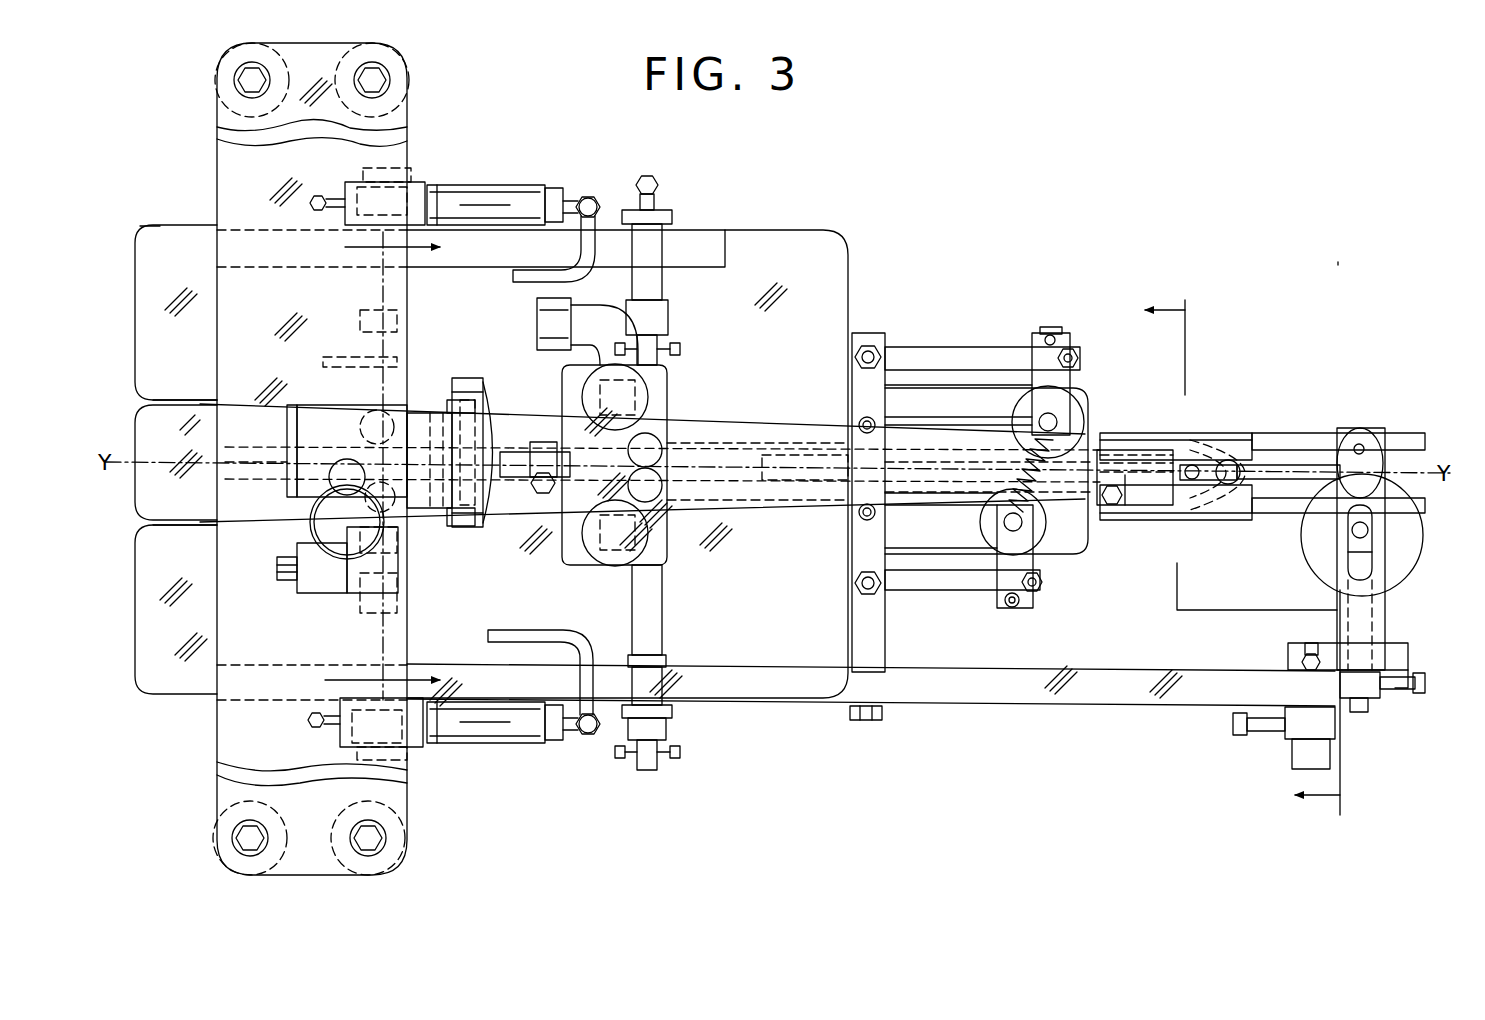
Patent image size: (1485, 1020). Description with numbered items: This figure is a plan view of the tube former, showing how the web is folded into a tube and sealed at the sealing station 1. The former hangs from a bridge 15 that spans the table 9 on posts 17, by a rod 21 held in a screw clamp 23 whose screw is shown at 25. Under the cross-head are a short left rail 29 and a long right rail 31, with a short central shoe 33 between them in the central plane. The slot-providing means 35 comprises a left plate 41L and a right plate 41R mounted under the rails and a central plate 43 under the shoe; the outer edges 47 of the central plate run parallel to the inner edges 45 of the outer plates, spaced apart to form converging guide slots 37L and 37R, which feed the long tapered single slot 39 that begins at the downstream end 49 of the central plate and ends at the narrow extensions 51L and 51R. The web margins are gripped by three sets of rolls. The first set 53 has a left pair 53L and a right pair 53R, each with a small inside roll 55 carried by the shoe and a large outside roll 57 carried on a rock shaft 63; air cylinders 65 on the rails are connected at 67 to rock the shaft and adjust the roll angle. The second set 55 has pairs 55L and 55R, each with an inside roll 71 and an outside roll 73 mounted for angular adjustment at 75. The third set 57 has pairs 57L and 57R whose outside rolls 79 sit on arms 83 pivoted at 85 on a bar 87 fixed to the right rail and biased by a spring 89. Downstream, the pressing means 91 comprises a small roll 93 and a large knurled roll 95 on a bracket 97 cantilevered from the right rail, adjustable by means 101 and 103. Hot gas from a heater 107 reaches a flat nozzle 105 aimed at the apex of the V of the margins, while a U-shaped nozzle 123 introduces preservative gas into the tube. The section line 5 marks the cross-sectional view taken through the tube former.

The sealing station 1 is at (1338, 265).
The section line 5- 5 is at (1253, 553).
The table 9 is at (368, 463).
The bridge 15 is at (217, 175).
The posts 17 is at (228, 107).
The rod 21 is at (330, 548).
The screw clamp 23 is at (300, 593).
The screw 25 is at (466, 528).
The short rail 29 is at (722, 245).
The long rail 31 is at (972, 688).
The central shoe 33 is at (238, 482).
The slot-providing means 35 is at (148, 224).
The left guide slot 37L is at (178, 400).
The right guide slot 37R is at (160, 525).
The single guide slot 39 is at (485, 515).
The left hand horizontal plate 41L is at (135, 275).
The right hand horizontal plate 41R is at (135, 640).
The central plate 43 is at (135, 460).
The inner edges 45 is at (506, 425).
The outer edges 47 is at (200, 407).
The downstream end 49 is at (432, 512).
The left forward end extension 51L is at (955, 385).
The right forward end extension 51R is at (935, 555).
The first set of rolls 53 is at (350, 305).
The left-hand pair of rolls 53L is at (338, 380).
The right-hand pair of rolls 53R is at (340, 533).
The second set of rolls 55 is at (678, 350).
The left-hand pair of rolls 55L is at (667, 395).
The right-hand pair of rolls 55R is at (667, 548).
The third set of rolls 57 is at (372, 348).
The left-hand pair of rolls 57L is at (1072, 388).
The right-hand pair of rolls 57R is at (1042, 548).
The rock shaft 63 is at (370, 640).
The air cylinders 65 is at (480, 185).
The connection 67 is at (408, 182).
The inside roll 71 is at (672, 443).
The outside roll 73 is at (650, 400).
The mounting means 75 is at (650, 176).
The outside roll 79 is at (1084, 420).
The arms 83 is at (968, 347).
The pivot 85 is at (855, 357).
The bar 87 is at (866, 333).
The spring 89 is at (1032, 445).
The pressing means 91 is at (1310, 575).
The small roll 93 is at (1352, 430).
The large roll 95 is at (1405, 572).
The bracket 97 is at (1410, 650).
The adjusting means 101 is at (1268, 750).
The adjusting means 103 is at (1368, 710).
The nozzle 105 is at (1270, 495).
The heater 107 is at (825, 500).
The nozzle 123 is at (1288, 432).